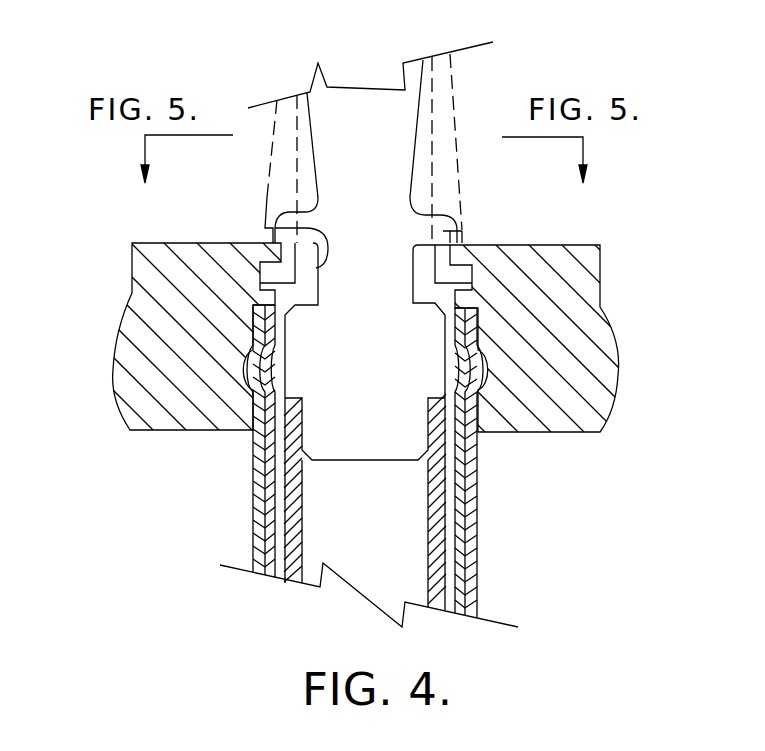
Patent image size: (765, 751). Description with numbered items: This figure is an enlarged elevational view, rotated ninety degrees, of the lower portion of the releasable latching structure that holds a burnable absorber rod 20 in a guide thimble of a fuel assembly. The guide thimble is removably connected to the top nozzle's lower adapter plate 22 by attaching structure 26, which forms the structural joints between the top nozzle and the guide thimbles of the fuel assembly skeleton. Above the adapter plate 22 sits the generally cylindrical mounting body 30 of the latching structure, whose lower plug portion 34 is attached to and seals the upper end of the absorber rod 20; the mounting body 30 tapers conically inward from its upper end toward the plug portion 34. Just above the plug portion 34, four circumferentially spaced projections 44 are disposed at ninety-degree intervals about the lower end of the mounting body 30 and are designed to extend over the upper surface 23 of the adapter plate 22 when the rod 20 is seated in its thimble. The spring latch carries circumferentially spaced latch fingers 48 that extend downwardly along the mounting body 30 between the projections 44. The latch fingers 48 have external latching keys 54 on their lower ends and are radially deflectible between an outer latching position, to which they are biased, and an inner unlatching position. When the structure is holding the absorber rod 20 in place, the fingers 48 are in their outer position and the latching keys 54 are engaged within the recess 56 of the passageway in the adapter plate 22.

The burnable absorber rod 20 is at (365, 565).
The adapter plate 22 is at (578, 313).
The upper surface 23 is at (158, 243).
The attaching structure 26 is at (240, 508).
The mounting body 30 is at (393, 120).
The lower plug portion 34 is at (347, 403).
The projections 44 is at (443, 231).
The latch fingers 48 is at (447, 181).
The latching keys 54 is at (466, 272).
The recess 56 is at (277, 230).